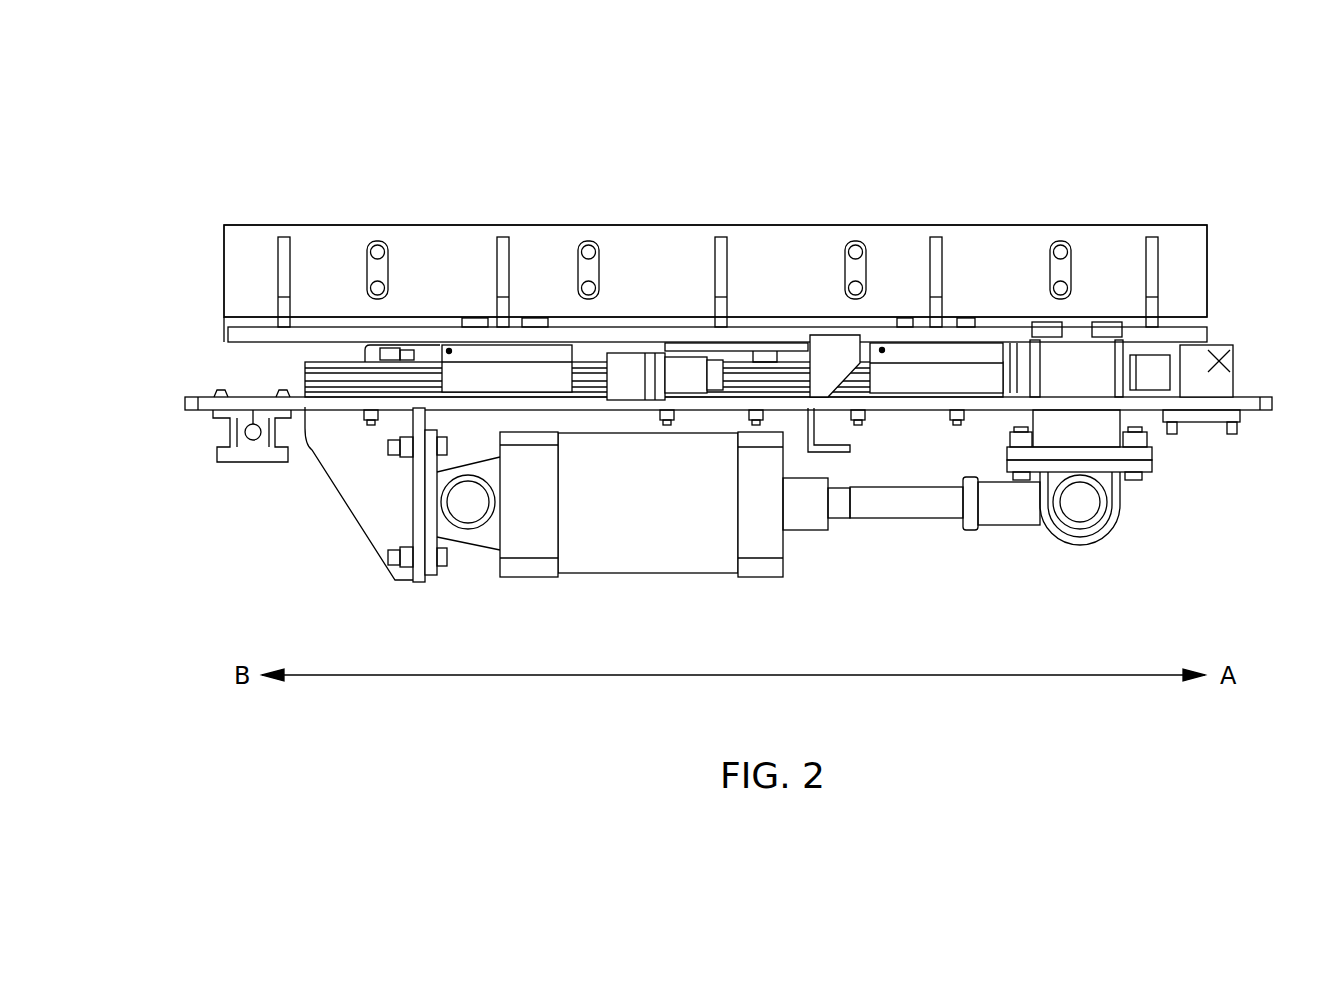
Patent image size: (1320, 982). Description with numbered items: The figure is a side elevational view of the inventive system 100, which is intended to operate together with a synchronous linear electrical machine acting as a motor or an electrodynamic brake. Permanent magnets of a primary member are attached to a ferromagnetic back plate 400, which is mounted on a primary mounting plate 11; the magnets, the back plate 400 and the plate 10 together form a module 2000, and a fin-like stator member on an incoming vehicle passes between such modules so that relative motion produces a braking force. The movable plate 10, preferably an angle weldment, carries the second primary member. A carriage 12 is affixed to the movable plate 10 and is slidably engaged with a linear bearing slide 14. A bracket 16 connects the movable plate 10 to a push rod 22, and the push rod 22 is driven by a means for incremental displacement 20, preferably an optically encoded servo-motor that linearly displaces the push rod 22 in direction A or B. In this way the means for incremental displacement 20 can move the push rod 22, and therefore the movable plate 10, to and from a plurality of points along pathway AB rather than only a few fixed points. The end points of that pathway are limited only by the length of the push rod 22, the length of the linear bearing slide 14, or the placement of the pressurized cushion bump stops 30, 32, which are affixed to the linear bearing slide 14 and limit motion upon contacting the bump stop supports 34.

The system 100 is at (330, 128).
The movable plate 10 is at (350, 283).
The carriage 12 is at (500, 373).
The cushion bump stop 30 is at (635, 367).
The bump stop support 34 is at (828, 347).
The cushion bump stop 32 is at (1210, 373).
The back plate 400 is at (252, 247).
The module 2000 is at (246, 284).
The primary mounting plate 11 is at (190, 397).
The linear bearing slide 14 is at (347, 376).
The means for incremental displacement 20 is at (662, 523).
The push rod 22 is at (920, 503).
The bracket 16 is at (1068, 428).